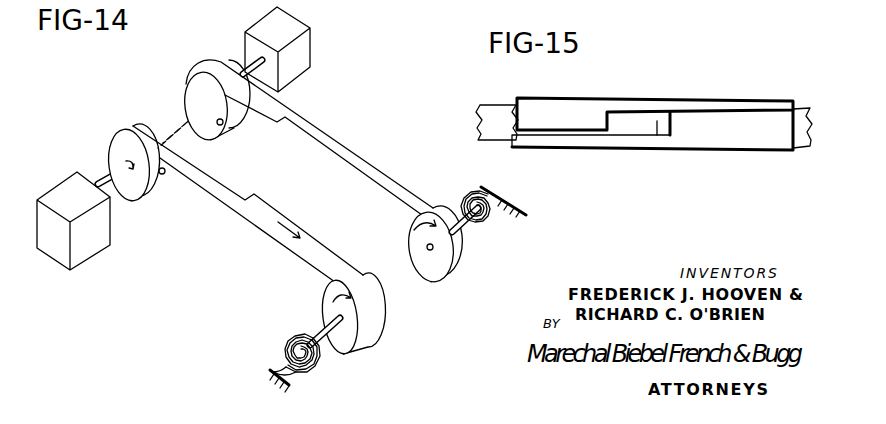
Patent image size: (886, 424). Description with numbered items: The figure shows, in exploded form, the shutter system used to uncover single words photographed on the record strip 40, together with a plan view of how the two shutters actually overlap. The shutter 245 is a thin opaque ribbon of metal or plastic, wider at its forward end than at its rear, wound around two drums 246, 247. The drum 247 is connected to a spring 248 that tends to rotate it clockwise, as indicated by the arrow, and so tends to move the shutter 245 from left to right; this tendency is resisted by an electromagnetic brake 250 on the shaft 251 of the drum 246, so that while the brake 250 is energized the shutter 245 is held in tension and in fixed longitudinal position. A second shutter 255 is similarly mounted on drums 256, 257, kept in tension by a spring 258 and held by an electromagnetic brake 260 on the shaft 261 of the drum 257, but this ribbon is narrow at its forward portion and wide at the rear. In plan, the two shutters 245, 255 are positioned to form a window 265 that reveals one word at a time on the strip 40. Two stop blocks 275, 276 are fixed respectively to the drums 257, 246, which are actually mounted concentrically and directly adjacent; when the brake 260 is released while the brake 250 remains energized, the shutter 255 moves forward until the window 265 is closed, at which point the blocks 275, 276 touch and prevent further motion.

In FIG. 15, the strip 40 is at (488, 108).
In FIG. 14, the shutter 245 is at (311, 233).
In FIG. 15, the shutter 245 is at (707, 138).
In FIG. 14, the drum 246 is at (136, 200).
In FIG. 14, the drum 247 is at (366, 338).
In FIG. 14, the spring 248 is at (288, 330).
In FIG. 14, the electromagnetic brake 250 is at (79, 252).
In FIG. 14, the shaft 251 is at (110, 186).
In FIG. 14, the shutter 255 is at (372, 160).
In FIG. 15, the shutter 255 is at (655, 99).
In FIG. 14, the drum 256 is at (433, 268).
In FIG. 14, the drum 257 is at (195, 88).
In FIG. 14, the spring 258 is at (474, 241).
In FIG. 14, the electromagnetic brake 260 is at (306, 47).
In FIG. 14, the shaft 261 is at (246, 72).
In FIG. 15, the window 265 is at (628, 112).
In FIG. 14, the stop block 275 is at (223, 125).
In FIG. 14, the stop block 276 is at (165, 177).